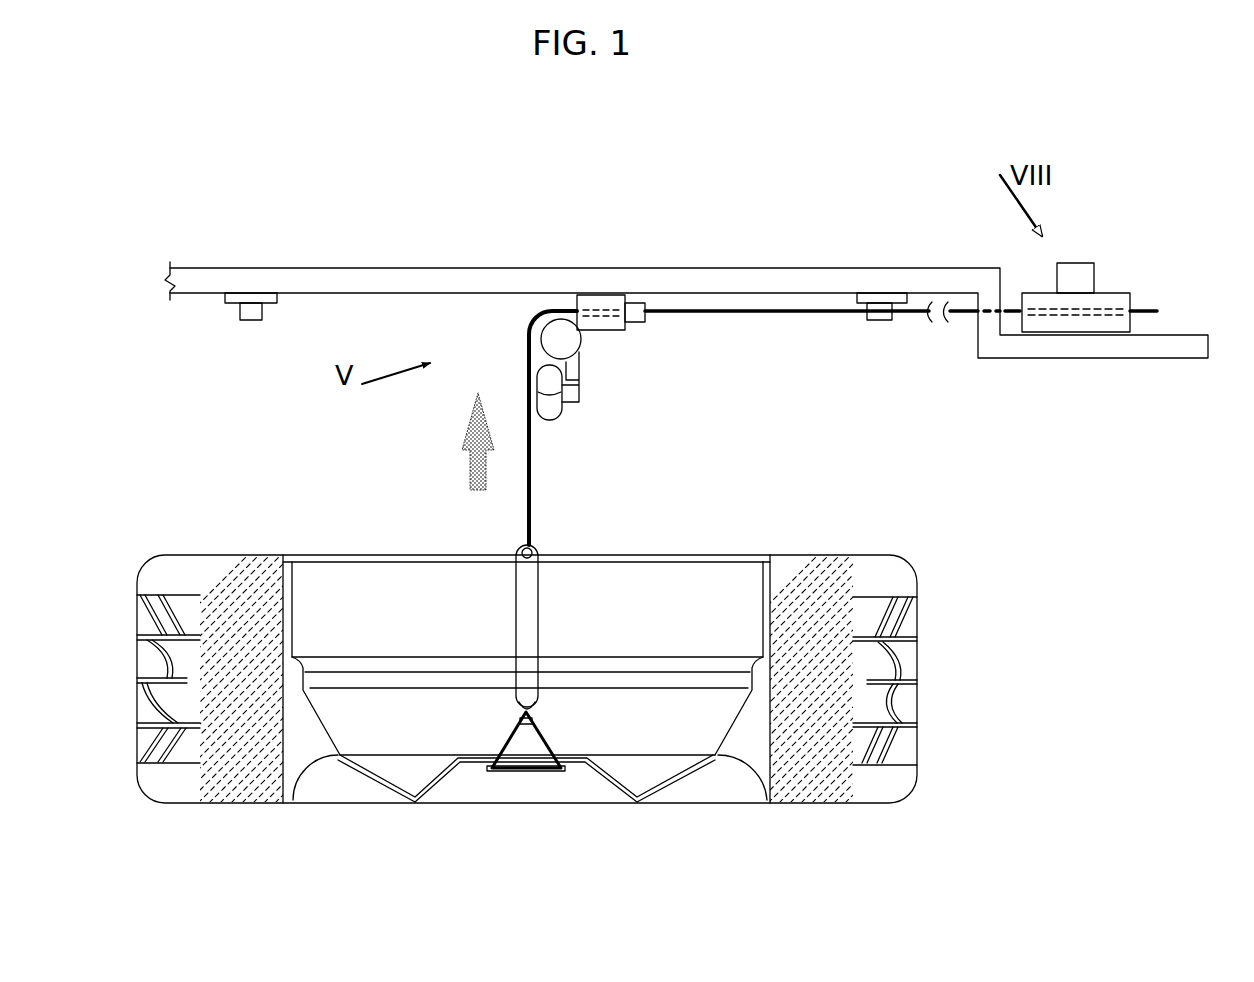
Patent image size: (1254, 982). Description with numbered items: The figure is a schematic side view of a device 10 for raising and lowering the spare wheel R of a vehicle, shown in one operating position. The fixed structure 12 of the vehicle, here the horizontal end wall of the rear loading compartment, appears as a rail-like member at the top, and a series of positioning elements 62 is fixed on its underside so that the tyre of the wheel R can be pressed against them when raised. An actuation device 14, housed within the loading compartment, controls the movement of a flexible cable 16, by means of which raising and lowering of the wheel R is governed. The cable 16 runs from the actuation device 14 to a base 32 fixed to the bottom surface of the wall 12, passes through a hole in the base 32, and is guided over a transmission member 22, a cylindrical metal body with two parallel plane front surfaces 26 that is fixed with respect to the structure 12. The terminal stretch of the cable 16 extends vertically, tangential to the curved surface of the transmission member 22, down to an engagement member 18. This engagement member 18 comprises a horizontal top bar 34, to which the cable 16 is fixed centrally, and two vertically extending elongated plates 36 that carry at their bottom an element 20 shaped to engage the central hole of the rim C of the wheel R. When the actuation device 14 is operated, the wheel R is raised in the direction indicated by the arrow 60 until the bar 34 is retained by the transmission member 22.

The device for raising and lowering the spare wheel 10 is at (712, 232).
The fixed structure of the vehicle 12 is at (337, 268).
The actuation device 14 is at (1082, 253).
The flexible cable 16 is at (687, 315).
The engagement member 18 is at (545, 612).
The element 20 is at (548, 732).
The transmission member 22 is at (597, 348).
The plane front surfaces 26 is at (568, 352).
The base 32 is at (592, 300).
The bar 34 is at (550, 405).
The elongated plates 36 is at (517, 597).
The arrow 60 is at (470, 478).
The positioning elements 62 is at (230, 317).
The spare wheel R is at (940, 612).
The rim C is at (458, 790).